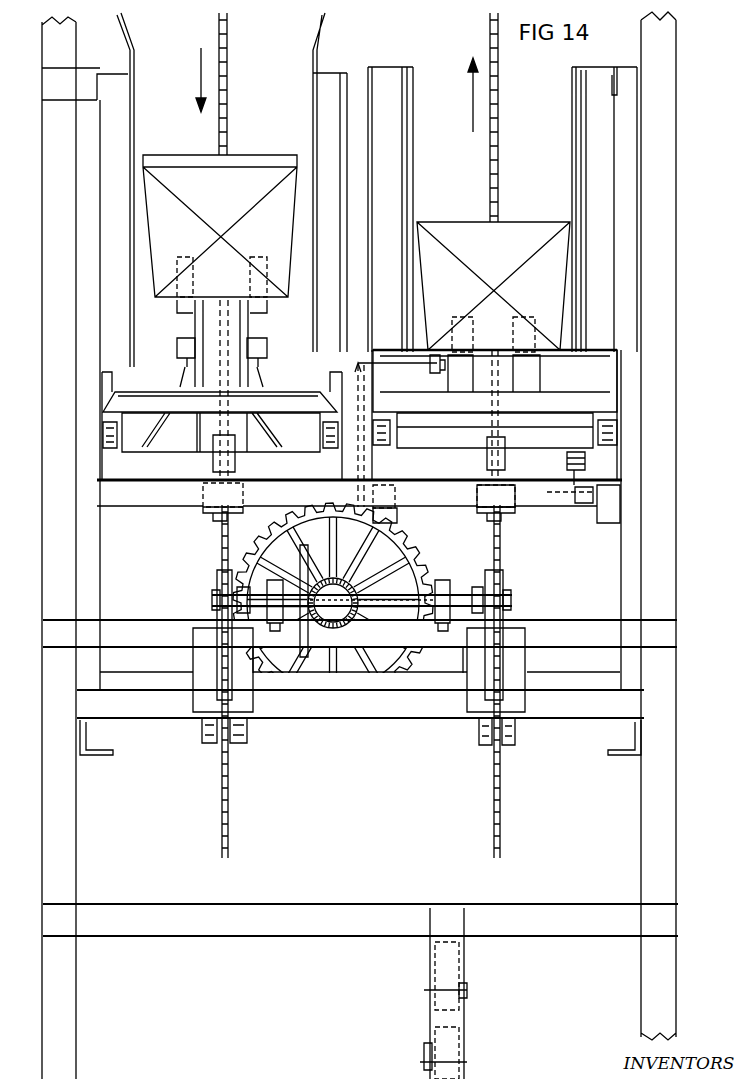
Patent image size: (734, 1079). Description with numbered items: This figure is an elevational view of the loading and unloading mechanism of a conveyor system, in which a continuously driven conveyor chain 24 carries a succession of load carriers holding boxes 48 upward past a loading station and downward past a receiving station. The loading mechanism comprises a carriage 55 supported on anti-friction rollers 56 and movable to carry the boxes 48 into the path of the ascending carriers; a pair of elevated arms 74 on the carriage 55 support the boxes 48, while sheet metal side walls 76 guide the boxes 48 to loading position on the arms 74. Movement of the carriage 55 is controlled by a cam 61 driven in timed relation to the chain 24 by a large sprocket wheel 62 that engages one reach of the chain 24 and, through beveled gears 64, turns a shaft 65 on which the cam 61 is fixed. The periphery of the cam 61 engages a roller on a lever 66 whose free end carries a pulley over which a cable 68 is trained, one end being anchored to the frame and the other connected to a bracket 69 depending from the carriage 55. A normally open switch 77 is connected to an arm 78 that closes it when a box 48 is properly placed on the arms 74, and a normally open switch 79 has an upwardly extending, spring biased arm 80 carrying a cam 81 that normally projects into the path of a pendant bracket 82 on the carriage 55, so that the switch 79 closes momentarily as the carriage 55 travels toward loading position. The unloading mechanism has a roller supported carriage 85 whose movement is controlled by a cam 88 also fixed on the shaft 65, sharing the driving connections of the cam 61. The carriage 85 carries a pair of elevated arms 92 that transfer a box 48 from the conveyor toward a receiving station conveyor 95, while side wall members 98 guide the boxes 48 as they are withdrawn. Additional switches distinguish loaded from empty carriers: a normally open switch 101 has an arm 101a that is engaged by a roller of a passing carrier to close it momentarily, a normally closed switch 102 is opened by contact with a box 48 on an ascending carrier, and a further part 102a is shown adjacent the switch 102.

The conveyor chain 24 is at (228, 93).
The side wall members 98 is at (133, 129).
The sheet metal side walls 76 is at (414, 187).
The box 48 is at (356, 253).
The receiving station conveyor 95 is at (262, 258).
The elevated arms 92 is at (185, 300).
The carriage 85 is at (188, 448).
The elevated arms 74 is at (528, 360).
The arm 78 is at (432, 373).
The carriage 55 is at (495, 430).
The anti-friction rollers 56 is at (380, 448).
The bracket 69 is at (487, 457).
The pendant bracket 82 is at (567, 460).
The switch 77 is at (400, 512).
The cam 81 is at (559, 493).
The arm 80 is at (588, 500).
The switch 79 is at (603, 525).
The sprocket wheel 62 is at (418, 556).
The beveled gears 64 is at (335, 615).
The shaft 65 is at (460, 585).
The cable 68 is at (503, 565).
The cam 88 is at (217, 585).
The cam 61 is at (512, 613).
The lever 66 is at (517, 733).
The switch 102 is at (460, 950).
The bolt 102a is at (468, 988).
The switch 101 is at (462, 1042).
The arm 101a is at (422, 1052).